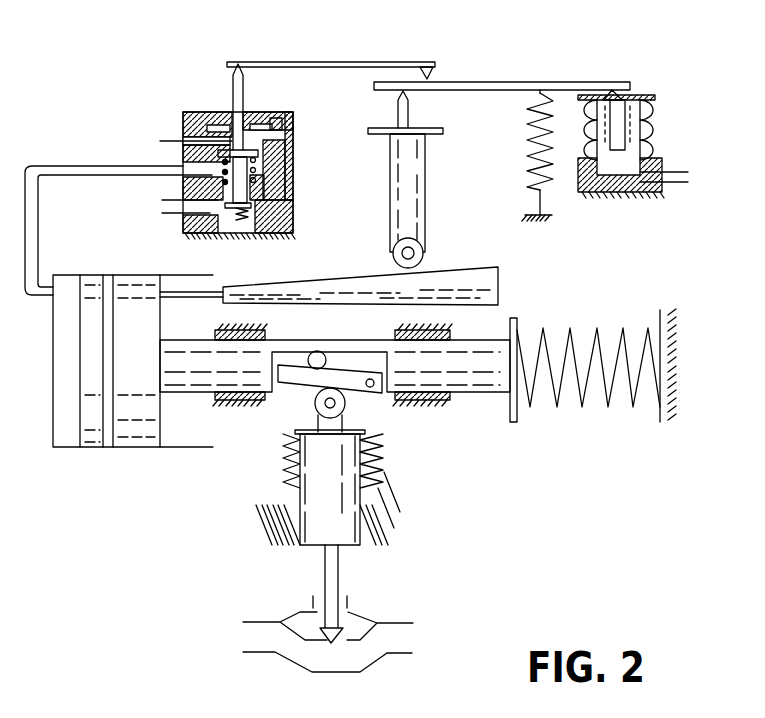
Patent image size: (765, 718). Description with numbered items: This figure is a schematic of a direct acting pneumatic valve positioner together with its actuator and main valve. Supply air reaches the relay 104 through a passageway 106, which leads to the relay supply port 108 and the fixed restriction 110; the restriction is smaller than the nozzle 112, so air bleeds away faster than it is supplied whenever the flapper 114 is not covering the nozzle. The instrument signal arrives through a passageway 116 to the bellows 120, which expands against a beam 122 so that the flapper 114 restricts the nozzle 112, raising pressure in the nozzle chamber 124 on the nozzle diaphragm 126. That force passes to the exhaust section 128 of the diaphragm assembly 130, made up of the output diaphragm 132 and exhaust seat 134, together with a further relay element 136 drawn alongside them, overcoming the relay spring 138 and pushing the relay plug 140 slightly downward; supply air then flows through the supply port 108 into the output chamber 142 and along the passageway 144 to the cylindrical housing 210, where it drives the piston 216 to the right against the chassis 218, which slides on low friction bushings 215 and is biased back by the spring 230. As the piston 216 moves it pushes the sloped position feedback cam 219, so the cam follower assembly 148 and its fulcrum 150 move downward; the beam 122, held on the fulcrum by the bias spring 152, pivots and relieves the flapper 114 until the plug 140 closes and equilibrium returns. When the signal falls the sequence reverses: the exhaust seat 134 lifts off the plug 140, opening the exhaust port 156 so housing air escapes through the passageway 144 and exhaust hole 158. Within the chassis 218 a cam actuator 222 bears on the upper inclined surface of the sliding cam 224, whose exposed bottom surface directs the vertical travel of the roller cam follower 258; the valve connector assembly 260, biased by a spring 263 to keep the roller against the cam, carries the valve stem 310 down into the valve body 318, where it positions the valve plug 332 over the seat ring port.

The relay 104 is at (176, 97).
The passageway 106 is at (160, 208).
The relay supply port 108 is at (250, 222).
The fixed restriction 110 is at (290, 172).
The nozzle 112 is at (225, 72).
The flapper 114 is at (305, 62).
The passageway 116 is at (690, 178).
The bellows 120 is at (668, 108).
The beam 122 is at (522, 82).
The nozzle chamber 124 is at (220, 112).
The nozzle diaphragm 126 is at (208, 112).
The exhaust section 128 is at (268, 112).
The diaphragm assembly 130 is at (185, 141).
The output diaphragm 132 is at (285, 160).
The exhaust seat 134 is at (185, 152).
The side wall 136 is at (293, 135).
The relay spring 138 is at (292, 205).
The relay plug 140 is at (280, 182).
The output chamber 142 is at (185, 182).
The passageway 144 is at (38, 238).
The cam follower assembly 148 is at (425, 212).
The fulcrum 150 is at (412, 100).
The bias spring 152 is at (545, 200).
The exhaust port 156 is at (283, 125).
The exhaust hole 158 is at (190, 137).
The cylindrical housing 210 is at (70, 450).
The low friction bushings 215 is at (215, 400).
The piston 216 is at (133, 435).
The chassis 218 is at (478, 340).
The position feedback cam 219 is at (308, 282).
The cam actuator 222 is at (320, 352).
The sliding cam 224 is at (335, 368).
The spring 230 is at (600, 410).
The roller cam follower 258 is at (348, 405).
The valve connector assembly 260 is at (318, 532).
The spring 263 is at (380, 462).
The valve stem 310 is at (340, 578).
The valve body 318 is at (362, 672).
The valve plug 332 is at (350, 614).